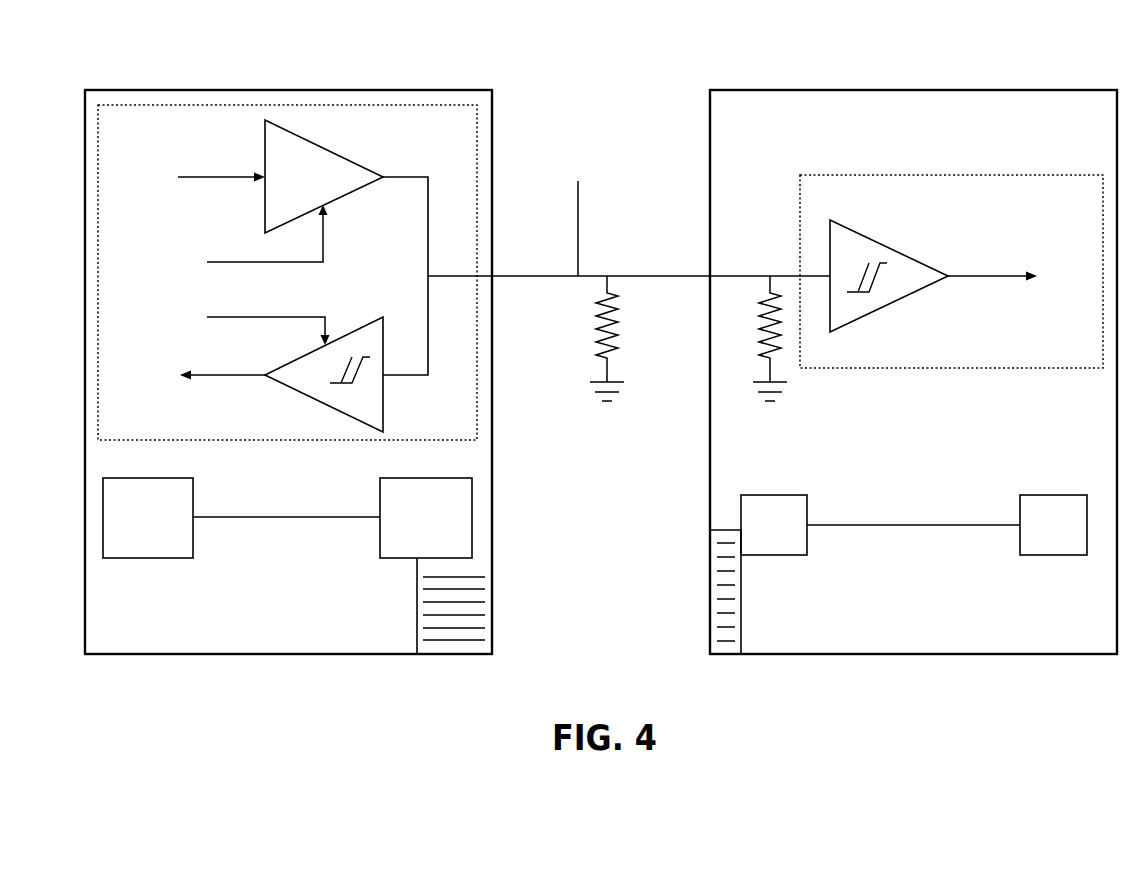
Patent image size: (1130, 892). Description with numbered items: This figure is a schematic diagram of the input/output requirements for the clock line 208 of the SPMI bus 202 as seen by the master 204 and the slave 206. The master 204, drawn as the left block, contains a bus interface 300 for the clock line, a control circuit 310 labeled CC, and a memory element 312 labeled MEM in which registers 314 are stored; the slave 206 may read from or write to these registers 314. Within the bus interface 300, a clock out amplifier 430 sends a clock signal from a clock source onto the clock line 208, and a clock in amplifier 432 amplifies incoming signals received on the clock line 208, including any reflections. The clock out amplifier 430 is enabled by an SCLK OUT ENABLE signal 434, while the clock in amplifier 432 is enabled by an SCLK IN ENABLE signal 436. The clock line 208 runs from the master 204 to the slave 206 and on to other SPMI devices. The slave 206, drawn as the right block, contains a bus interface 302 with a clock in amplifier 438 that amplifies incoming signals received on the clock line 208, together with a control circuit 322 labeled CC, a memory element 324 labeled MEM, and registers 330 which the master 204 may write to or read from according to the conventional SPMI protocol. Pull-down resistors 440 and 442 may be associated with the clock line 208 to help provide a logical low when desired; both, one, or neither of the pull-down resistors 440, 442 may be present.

The SPMI bus 202 is at (591, 84).
The master 204 is at (302, 90).
The slave 206 is at (927, 90).
The clock line 208 is at (527, 277).
The bus interface 300 is at (427, 105).
The bus interface 302 is at (1060, 175).
The control circuit 310 is at (148, 558).
The memory element 312 is at (473, 540).
The registers 314 is at (485, 608).
The control circuit 322 is at (1053, 555).
The memory element 324 is at (775, 555).
The registers 330 is at (710, 603).
The clock out amplifier 430 is at (323, 148).
The clock in amplifier 432 is at (313, 400).
The SCLK OUT ENABLE signal 434 is at (325, 262).
The SCLK IN ENABLE signal 436 is at (260, 317).
The clock in amplifier 438 is at (902, 303).
The pull-down resistor 440 is at (763, 355).
The pull-down resistor 442 is at (615, 358).